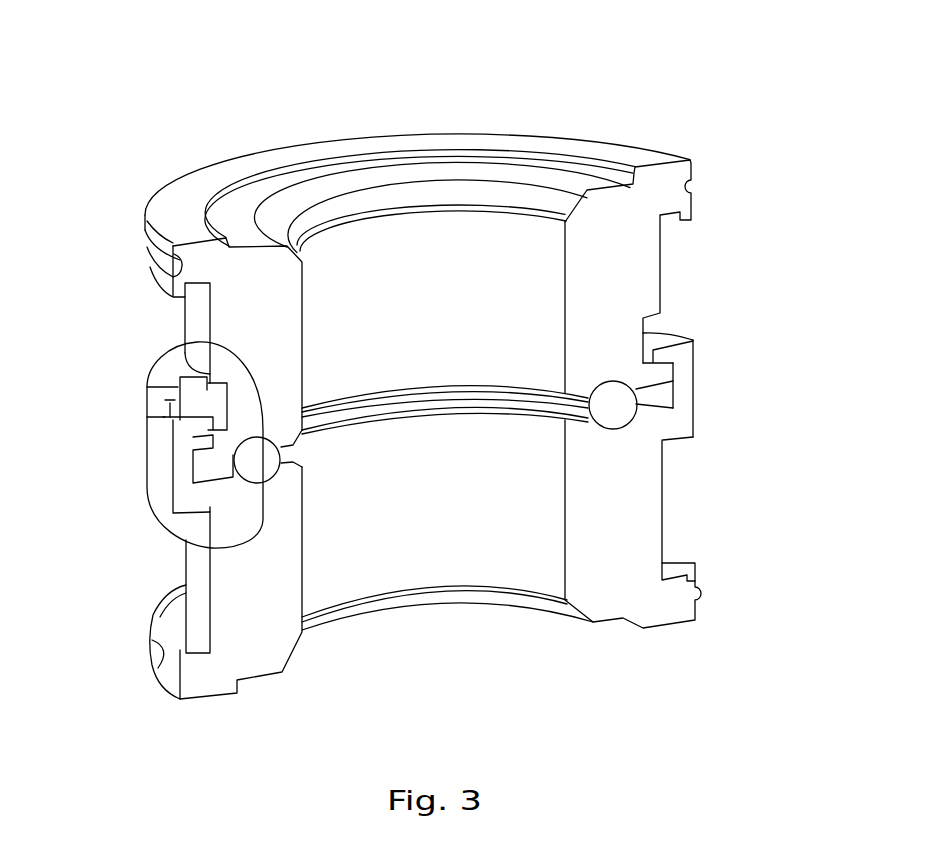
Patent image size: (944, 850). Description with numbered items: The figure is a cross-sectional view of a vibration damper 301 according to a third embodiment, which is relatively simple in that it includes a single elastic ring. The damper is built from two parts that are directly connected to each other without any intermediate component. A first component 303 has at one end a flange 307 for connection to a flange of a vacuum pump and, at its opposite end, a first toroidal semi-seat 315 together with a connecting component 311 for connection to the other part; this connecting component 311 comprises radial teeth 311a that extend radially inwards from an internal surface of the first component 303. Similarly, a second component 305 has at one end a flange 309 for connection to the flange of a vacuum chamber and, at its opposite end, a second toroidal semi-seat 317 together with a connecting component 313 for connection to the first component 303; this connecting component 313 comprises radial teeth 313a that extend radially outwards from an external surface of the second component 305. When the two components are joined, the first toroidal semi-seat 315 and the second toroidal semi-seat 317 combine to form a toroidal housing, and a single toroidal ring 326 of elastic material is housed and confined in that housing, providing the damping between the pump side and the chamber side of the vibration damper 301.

The vibration damper 301 is at (730, 133).
The first component 303 is at (662, 518).
The second component 305 is at (660, 245).
The flange 307 is at (503, 612).
The flange 309 is at (408, 141).
The connecting component 311 is at (703, 388).
The radial teeth 311a is at (667, 340).
The connecting component 313 is at (195, 449).
The radial teeth 313a is at (667, 440).
The first toroidal semi-seat 315 is at (213, 549).
The second toroidal semi-seat 317 is at (200, 341).
The toroidal ring 326 is at (240, 462).